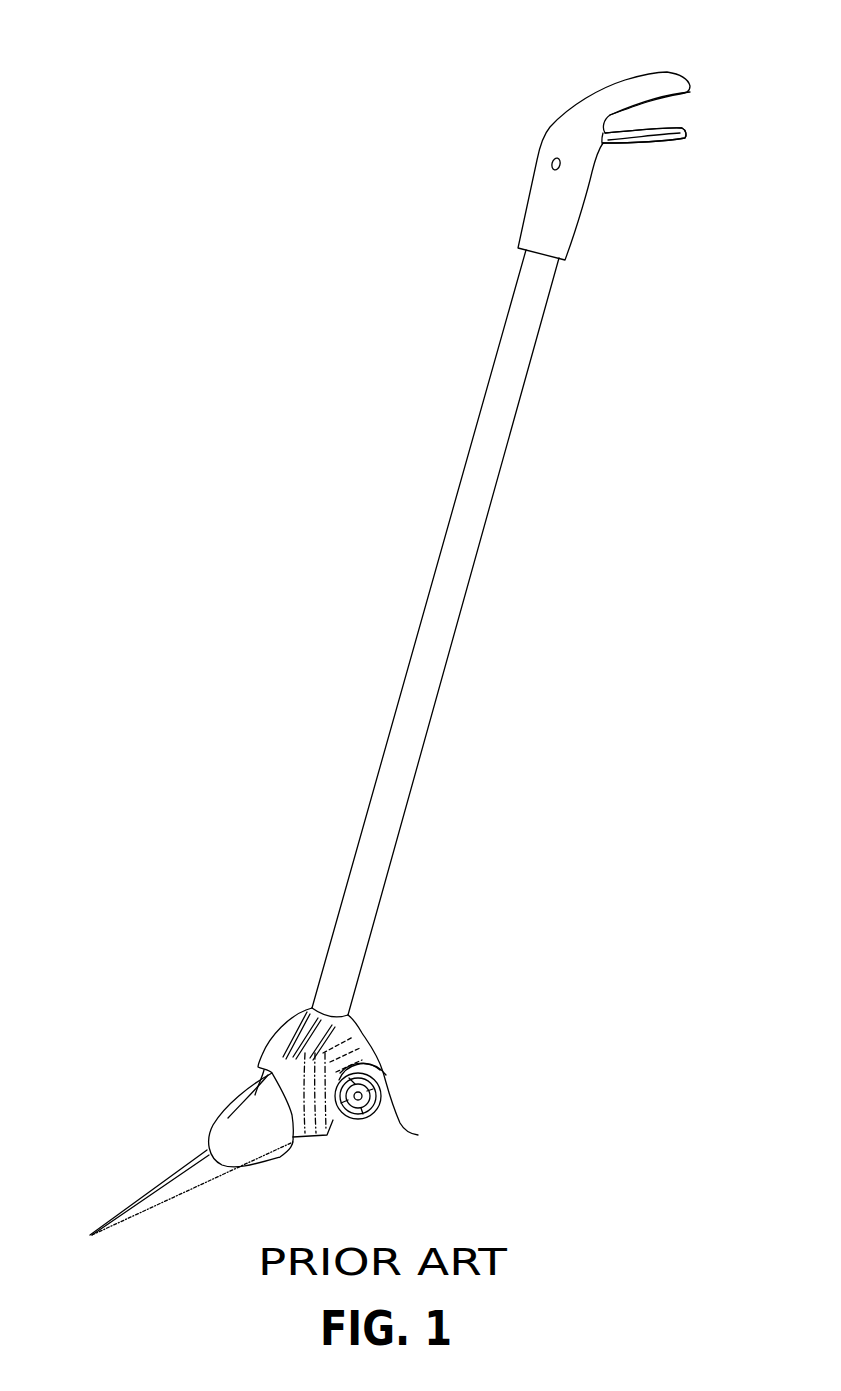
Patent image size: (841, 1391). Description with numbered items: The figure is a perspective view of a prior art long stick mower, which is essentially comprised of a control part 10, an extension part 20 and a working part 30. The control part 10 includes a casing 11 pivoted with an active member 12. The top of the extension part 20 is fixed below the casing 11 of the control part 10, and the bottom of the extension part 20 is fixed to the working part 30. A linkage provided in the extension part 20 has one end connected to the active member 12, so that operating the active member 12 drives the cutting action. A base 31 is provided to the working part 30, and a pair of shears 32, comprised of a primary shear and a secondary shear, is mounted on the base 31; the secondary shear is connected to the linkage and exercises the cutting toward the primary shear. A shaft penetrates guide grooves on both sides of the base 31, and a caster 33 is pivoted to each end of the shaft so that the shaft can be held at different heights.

The control part 10 is at (568, 82).
The casing 11 is at (562, 148).
The active member 12 is at (628, 155).
The extension part 20 is at (478, 510).
The working part 30 is at (212, 1087).
The base 31 is at (355, 1042).
The pair of shears 32 is at (143, 1175).
The caster 33 is at (378, 1085).